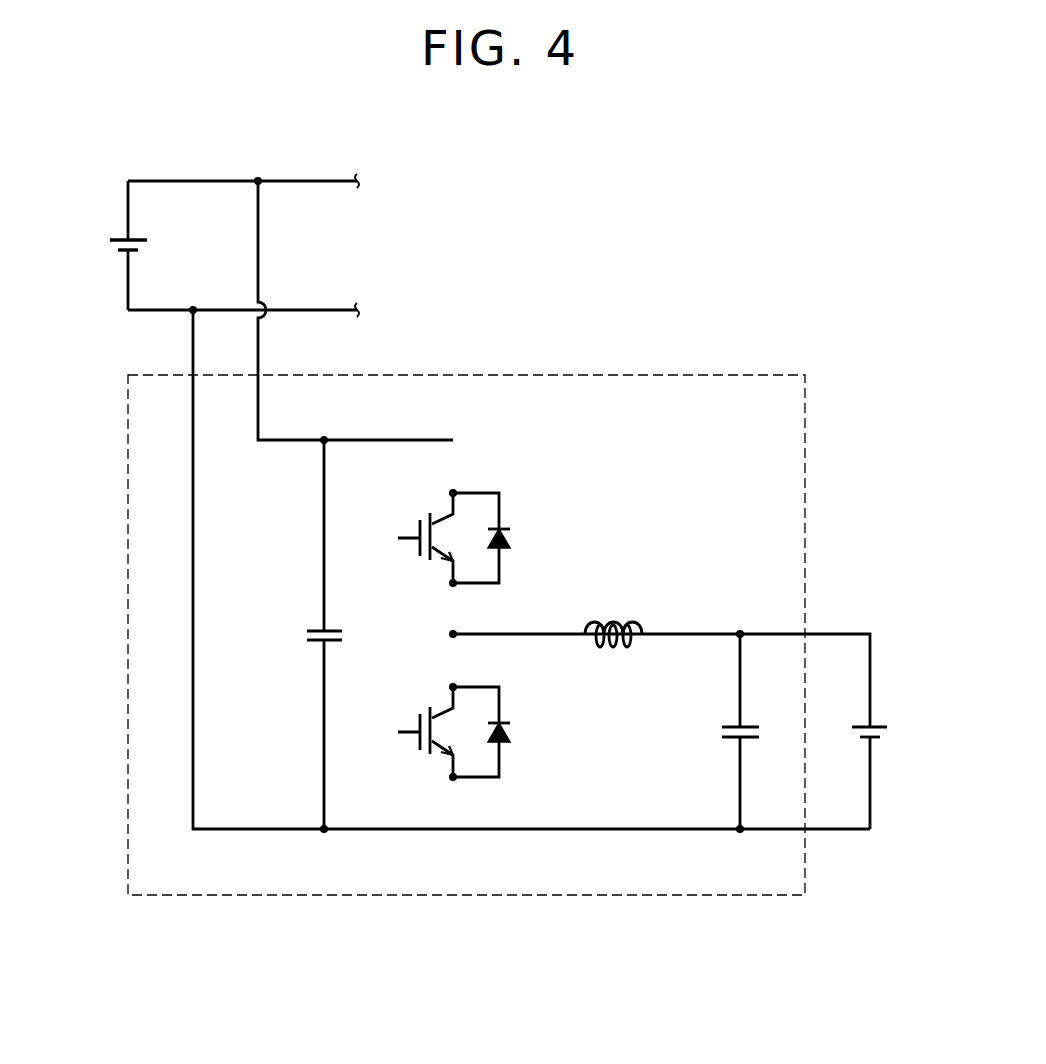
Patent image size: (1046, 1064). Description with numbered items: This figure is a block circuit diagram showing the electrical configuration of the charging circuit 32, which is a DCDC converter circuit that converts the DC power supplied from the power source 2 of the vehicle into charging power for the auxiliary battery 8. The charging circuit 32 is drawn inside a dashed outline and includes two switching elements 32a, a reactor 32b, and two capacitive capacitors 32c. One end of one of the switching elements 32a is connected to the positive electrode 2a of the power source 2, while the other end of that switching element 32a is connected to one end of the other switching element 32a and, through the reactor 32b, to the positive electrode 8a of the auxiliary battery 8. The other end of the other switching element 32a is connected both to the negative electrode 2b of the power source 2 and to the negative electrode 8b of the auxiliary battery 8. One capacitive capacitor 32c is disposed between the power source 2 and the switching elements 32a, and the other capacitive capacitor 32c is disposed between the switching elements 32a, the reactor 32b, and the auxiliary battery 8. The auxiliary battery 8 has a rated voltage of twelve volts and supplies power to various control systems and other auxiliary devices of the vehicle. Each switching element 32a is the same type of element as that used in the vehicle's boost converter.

The power source 2 is at (99, 250).
The positive electrode 2a is at (121, 238).
The negative electrode 2b is at (122, 254).
The charging circuit 32 is at (765, 375).
The switching element 32a is at (446, 512).
The reactor 32b is at (619, 618).
The capacitive capacitor 32c is at (315, 628).
The auxiliary battery 8 is at (901, 738).
The positive electrode 8a is at (877, 725).
The negative electrode 8b is at (874, 740).